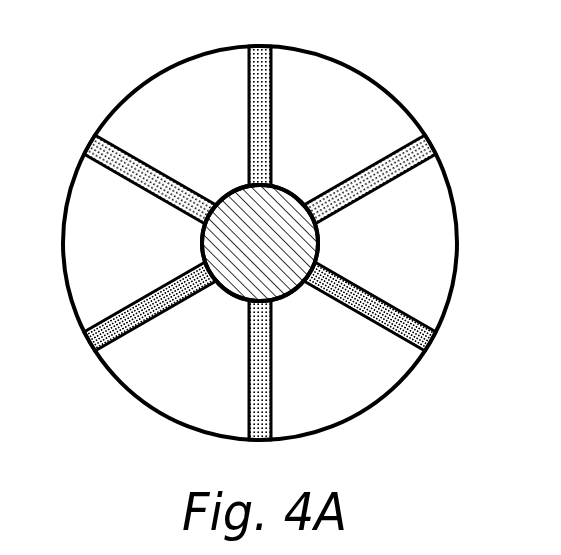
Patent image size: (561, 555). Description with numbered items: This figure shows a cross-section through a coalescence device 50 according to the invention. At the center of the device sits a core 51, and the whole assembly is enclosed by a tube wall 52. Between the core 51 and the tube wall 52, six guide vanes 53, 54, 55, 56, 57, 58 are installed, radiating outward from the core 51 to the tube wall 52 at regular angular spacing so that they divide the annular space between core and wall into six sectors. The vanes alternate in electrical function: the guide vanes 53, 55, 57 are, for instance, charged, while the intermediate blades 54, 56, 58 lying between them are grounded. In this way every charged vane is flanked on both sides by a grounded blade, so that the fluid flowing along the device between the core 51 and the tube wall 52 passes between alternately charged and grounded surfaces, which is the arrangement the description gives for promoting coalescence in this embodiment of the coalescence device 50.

The coalescence device 50 is at (84, 79).
The core 51 is at (318, 243).
The tube wall 52 is at (458, 238).
The guide vane 53 is at (272, 137).
The intermediate blade 54 is at (360, 198).
The guide vane 55 is at (352, 308).
The intermediate blade 56 is at (250, 355).
The guide vane 57 is at (162, 290).
The intermediate blade 58 is at (165, 181).